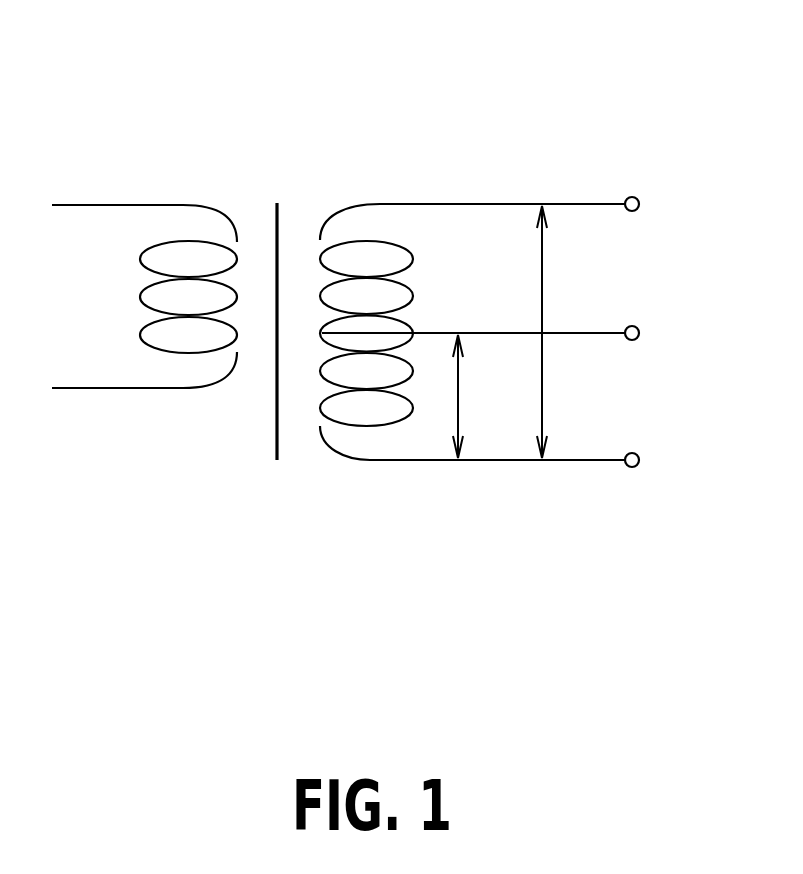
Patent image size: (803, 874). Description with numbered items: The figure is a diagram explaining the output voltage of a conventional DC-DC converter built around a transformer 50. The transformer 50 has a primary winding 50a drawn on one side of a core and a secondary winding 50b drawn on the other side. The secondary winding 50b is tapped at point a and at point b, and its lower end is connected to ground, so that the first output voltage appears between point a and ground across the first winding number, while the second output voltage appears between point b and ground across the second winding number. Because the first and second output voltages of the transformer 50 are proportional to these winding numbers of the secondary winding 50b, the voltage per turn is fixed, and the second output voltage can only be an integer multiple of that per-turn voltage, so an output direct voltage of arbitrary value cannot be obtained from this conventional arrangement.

The transformer 50 is at (277, 150).
The primary winding 50a is at (170, 205).
The secondary winding 50b is at (380, 204).